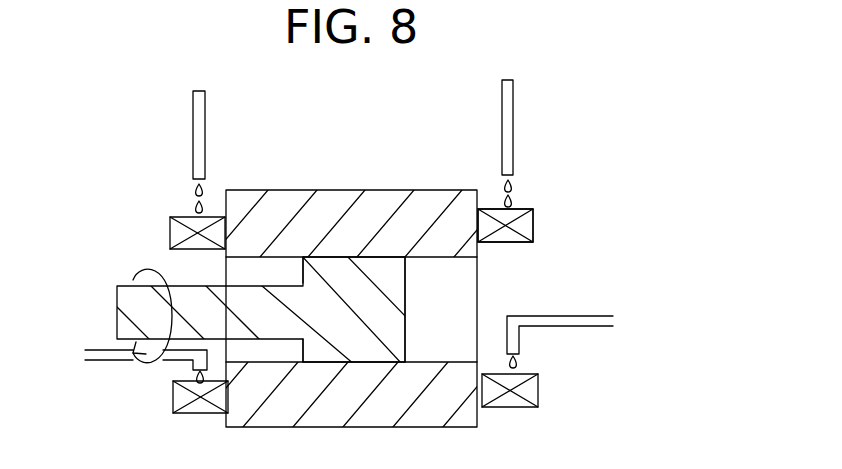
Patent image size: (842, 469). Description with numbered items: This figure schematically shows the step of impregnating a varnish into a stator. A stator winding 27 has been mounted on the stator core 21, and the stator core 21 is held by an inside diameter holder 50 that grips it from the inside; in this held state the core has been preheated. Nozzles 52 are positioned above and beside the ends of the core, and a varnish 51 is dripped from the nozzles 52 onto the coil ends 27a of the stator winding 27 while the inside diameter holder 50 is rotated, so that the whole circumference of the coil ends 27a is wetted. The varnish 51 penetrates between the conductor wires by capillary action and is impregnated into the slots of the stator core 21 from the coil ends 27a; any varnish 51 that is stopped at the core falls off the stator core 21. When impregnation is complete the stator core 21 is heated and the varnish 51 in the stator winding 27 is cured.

The stator core 21 is at (416, 189).
The stator winding 27 is at (492, 204).
The coil ends 27a is at (528, 228).
The inside diameter holder 50 is at (130, 302).
The varnish 51 is at (517, 197).
The nozzles 52 is at (517, 140).